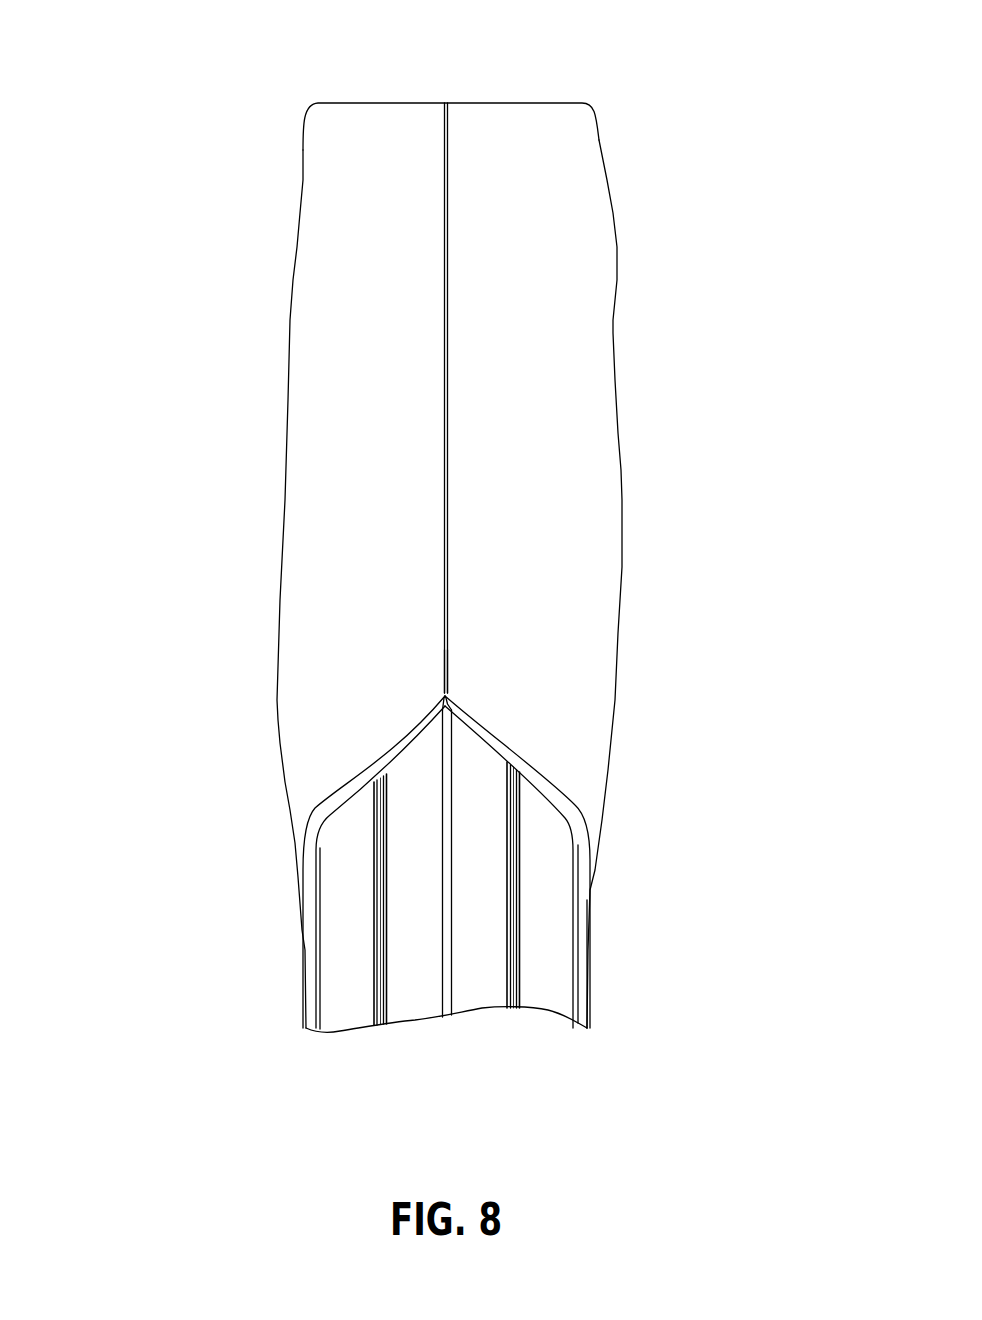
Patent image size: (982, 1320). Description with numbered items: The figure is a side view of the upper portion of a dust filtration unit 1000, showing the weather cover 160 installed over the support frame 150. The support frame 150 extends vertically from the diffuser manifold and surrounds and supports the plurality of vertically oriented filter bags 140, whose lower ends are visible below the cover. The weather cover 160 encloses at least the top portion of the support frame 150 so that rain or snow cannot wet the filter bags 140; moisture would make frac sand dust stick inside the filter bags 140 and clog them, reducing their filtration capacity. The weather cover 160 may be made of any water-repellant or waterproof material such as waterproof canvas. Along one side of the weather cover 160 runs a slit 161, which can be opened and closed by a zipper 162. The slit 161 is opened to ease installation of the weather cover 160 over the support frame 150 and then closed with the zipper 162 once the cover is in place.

The dust filtration unit 1000 is at (536, 82).
The filter bags 140 is at (548, 1002).
The support frame 150 is at (583, 992).
The weather cover 160 is at (300, 782).
The slit 161 is at (345, 785).
The zipper 162 is at (445, 690).